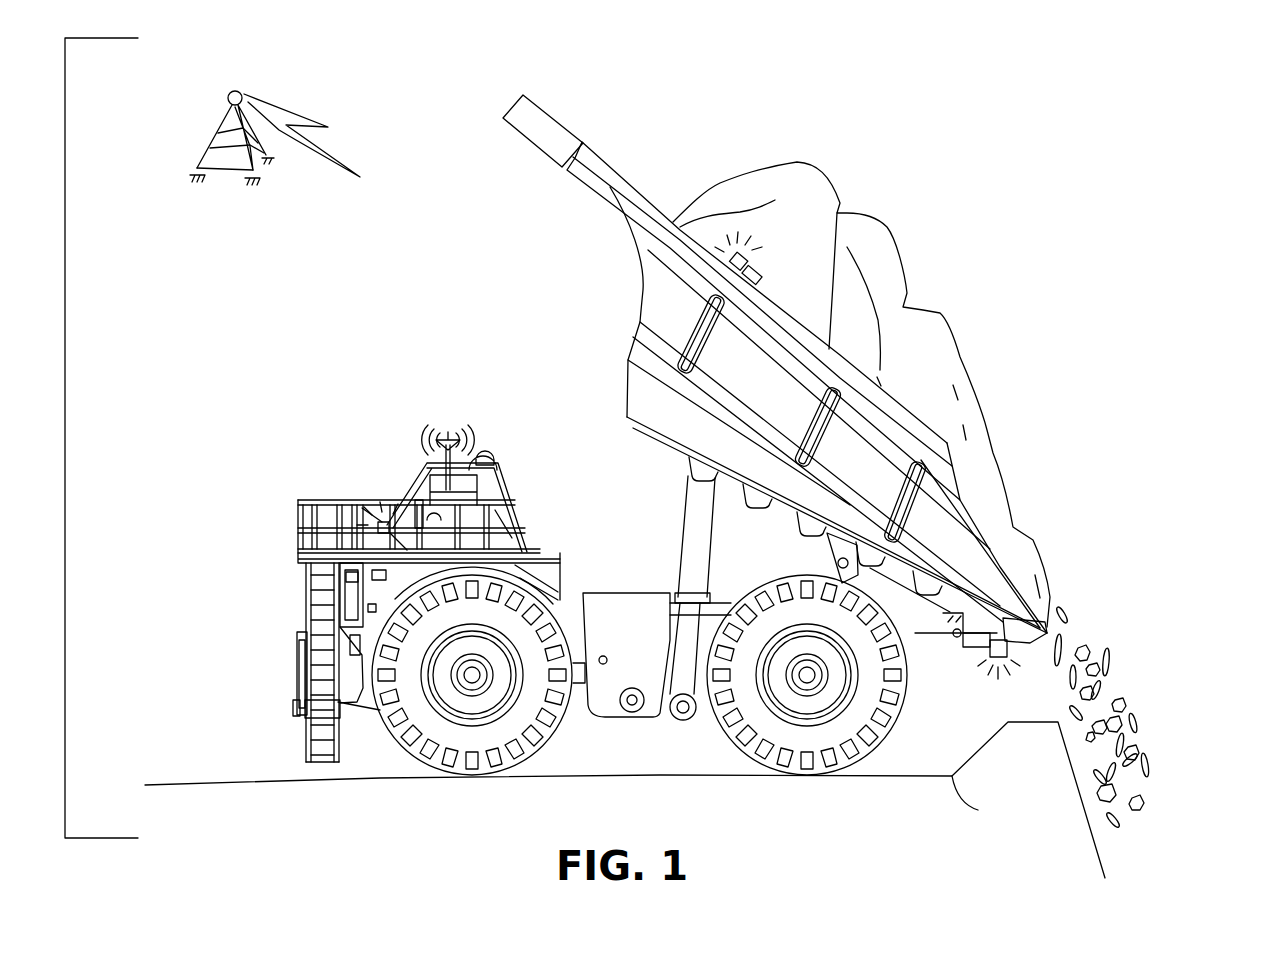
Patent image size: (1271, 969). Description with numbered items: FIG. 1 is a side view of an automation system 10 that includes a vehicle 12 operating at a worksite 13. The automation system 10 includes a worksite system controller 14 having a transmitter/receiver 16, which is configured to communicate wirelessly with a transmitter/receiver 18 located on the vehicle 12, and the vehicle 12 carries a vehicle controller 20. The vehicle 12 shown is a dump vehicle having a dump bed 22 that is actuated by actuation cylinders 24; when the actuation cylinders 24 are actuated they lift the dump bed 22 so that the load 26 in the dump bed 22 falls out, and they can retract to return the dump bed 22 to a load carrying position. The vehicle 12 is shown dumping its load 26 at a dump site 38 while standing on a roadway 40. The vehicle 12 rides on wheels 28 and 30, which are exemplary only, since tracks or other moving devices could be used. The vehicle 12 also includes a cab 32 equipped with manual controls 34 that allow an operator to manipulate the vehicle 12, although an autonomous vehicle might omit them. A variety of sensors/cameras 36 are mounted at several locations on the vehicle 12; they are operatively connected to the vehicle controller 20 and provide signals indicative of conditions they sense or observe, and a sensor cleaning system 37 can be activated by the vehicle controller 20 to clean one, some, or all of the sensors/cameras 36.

The automation system 10 is at (441, 80).
The vehicle 12 is at (555, 384).
The worksite 13 is at (612, 78).
The worksite system controller 14 is at (166, 151).
The transmitter/receiver 16 is at (239, 86).
The transmitter/receiver 18 is at (451, 433).
The vehicle controller 20 is at (500, 481).
The dump bed 22 is at (620, 185).
The actuation cylinders 24 is at (692, 528).
The load 26 is at (878, 244).
The wheels 28 is at (904, 706).
The wheels 30 is at (568, 722).
The cab 32 is at (495, 452).
The manual controls 34 is at (416, 497).
The sensors/cameras 36 is at (742, 256).
The sensor cleaning system 37 is at (758, 278).
The dump site 38 is at (1114, 606).
The roadways 40 is at (238, 779).